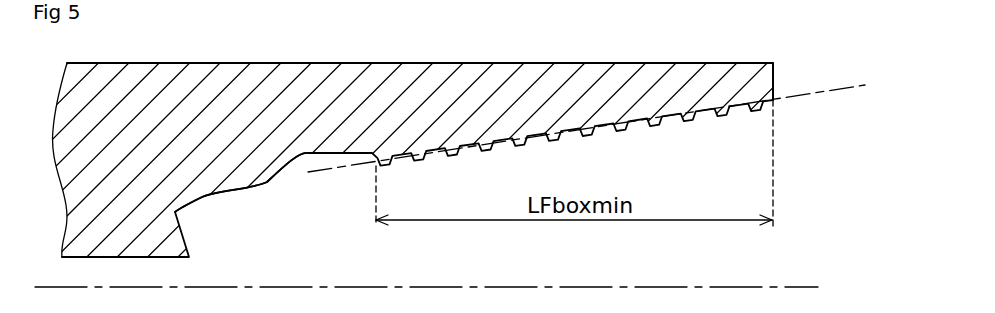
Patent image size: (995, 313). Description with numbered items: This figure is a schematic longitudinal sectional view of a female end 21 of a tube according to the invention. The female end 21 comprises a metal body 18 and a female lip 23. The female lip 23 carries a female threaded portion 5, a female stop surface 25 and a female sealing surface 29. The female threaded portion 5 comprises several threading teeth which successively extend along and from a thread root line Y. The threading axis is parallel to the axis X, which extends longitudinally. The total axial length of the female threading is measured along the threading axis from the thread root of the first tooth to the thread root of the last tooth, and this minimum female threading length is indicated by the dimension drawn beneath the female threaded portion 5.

The metal body 18 is at (193, 140).
The female end 21 is at (282, 107).
The female lip 23 is at (520, 105).
The female stop surface 25 is at (777, 83).
The female threaded portion 5 is at (653, 127).
The female sealing surface 29 is at (270, 182).
The axis X is at (775, 287).
The thread root line Y is at (802, 95).